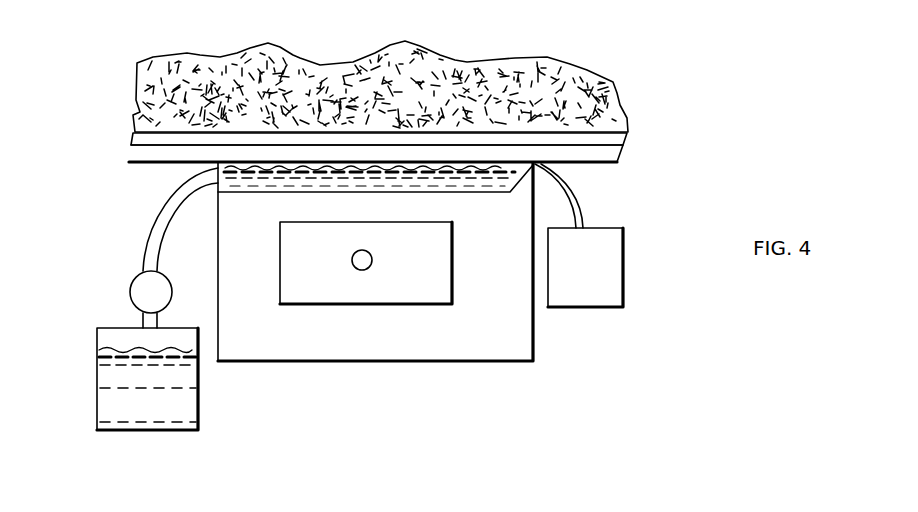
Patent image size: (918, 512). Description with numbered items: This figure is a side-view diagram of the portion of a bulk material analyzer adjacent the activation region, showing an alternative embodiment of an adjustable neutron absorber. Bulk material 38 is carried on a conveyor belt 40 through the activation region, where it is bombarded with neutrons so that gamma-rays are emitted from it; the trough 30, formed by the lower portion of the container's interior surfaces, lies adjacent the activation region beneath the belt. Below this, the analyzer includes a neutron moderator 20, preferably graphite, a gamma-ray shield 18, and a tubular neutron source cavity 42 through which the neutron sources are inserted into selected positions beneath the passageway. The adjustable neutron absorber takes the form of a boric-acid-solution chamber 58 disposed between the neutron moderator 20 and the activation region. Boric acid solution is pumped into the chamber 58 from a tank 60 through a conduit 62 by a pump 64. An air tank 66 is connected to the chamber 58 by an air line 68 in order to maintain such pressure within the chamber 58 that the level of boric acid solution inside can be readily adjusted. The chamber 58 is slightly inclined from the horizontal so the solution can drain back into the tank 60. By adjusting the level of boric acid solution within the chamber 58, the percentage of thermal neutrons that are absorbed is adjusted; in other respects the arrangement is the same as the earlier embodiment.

The gamma-ray shield 18 is at (451, 266).
The neutron moderator 20 is at (236, 237).
The trough 30 is at (617, 155).
The bulk material 38 is at (461, 62).
The conveyor belt 40 is at (628, 138).
The neutron source cavity 42 is at (369, 268).
The boric-acid-solution chamber 58 is at (492, 191).
The tank 60 is at (97, 366).
The conduit 62 is at (148, 224).
The pump 64 is at (130, 290).
The air tank 66 is at (623, 282).
The air line 68 is at (567, 192).